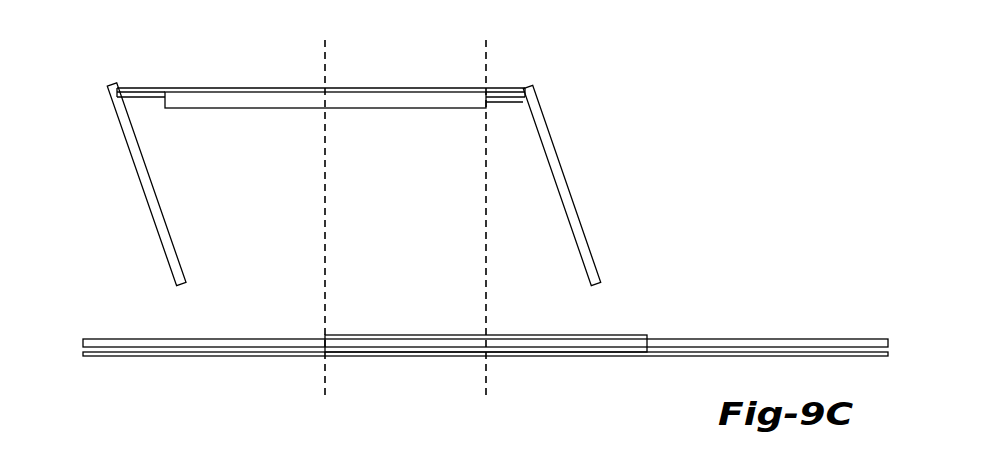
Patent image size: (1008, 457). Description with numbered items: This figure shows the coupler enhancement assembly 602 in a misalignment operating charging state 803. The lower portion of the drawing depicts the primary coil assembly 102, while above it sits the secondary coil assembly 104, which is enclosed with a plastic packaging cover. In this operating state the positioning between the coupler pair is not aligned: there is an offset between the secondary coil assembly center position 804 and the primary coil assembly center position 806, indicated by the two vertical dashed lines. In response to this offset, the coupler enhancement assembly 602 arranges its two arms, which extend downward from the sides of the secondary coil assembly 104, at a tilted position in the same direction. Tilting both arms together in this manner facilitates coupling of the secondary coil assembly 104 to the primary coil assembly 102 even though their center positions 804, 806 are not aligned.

The primary coil assembly 102 is at (385, 357).
The secondary coil assembly 104 is at (203, 102).
The coupler enhancement assembly 602 is at (170, 253).
The misalignment operating charging state 803 is at (110, 40).
The secondary coil assembly center position 804 is at (327, 205).
The primary coil assembly center position 806 is at (487, 205).